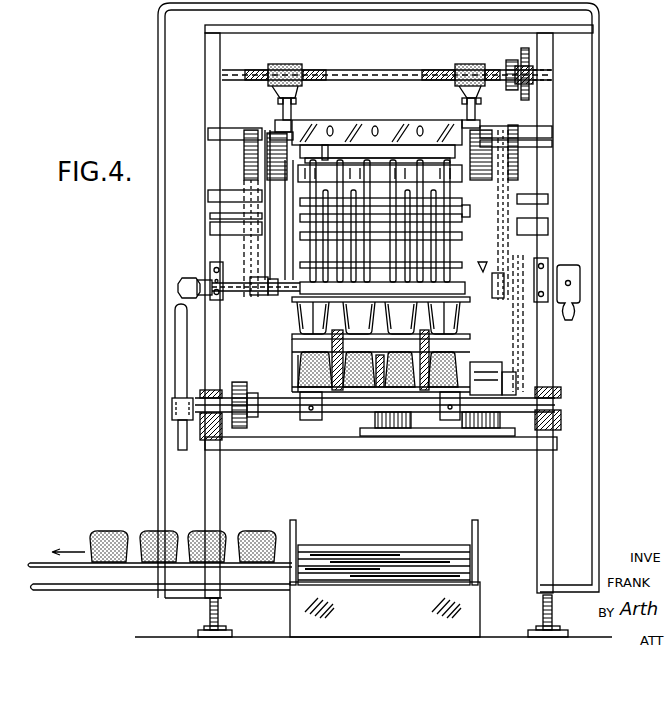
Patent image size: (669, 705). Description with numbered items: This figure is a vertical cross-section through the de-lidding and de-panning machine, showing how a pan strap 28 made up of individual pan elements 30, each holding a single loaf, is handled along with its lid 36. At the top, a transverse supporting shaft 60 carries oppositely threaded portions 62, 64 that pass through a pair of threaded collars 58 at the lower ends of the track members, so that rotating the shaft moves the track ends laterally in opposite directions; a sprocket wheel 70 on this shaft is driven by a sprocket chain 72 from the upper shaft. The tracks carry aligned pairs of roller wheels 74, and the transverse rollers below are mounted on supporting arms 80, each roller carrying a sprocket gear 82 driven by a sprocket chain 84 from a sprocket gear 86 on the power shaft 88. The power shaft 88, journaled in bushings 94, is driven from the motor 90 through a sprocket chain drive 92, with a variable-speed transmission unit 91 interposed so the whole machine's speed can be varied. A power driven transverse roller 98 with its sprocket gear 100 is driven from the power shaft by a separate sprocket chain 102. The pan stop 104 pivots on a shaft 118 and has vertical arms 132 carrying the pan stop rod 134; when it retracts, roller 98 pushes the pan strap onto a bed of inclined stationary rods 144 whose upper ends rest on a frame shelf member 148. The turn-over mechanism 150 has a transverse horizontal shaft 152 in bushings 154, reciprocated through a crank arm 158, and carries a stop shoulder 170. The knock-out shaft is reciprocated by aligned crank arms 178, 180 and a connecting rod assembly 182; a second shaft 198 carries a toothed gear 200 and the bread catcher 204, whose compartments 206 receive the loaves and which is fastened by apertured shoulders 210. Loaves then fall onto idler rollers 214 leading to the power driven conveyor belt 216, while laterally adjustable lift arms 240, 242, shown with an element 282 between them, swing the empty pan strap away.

The pan strap 28 is at (409, 107).
The pan element 30 is at (359, 334).
The lid 36 is at (373, 106).
The threaded collar 58 is at (290, 65).
The transverse supporting shaft 60 is at (364, 70).
The threaded portion 62 is at (260, 70).
The threaded portion 64 is at (441, 70).
The sprocket wheel 70 is at (520, 92).
The sprocket chain 72 is at (530, 56).
The roller wheels 74 is at (303, 150).
The supporting arm 80 is at (207, 182).
The sprocket gear 82 is at (240, 150).
The bracket 84 is at (262, 275).
The sprocket gear 86 is at (270, 291).
The power shaft 88 is at (258, 296).
The motor 90 is at (412, 430).
The variable-speed transmission unit 91 is at (486, 362).
The sprocket chain drive 92 is at (525, 348).
The bushing 94 is at (510, 250).
The power driven transverse roller 98 is at (530, 140).
The sprocket gear 100 is at (500, 145).
The sprocket chain 102 is at (540, 245).
The pan stop 104 is at (324, 158).
The shaft 118 is at (477, 214).
The vertical arm 132 is at (250, 217).
The pan stop rod 134 is at (408, 150).
The stationary rod 144 is at (357, 257).
The frame shelf member 148 is at (240, 192).
The turn-over mechanism 150 is at (484, 262).
The transverse horizontal shaft 152 is at (222, 268).
The bushing 154 is at (215, 268).
The crank arm 158 is at (582, 292).
The stop shoulder 170 is at (272, 296).
The crank arm 178 is at (172, 430).
The crank arm 180 is at (178, 291).
The connecting rod assembly 182 is at (175, 340).
The shaft 198 is at (520, 412).
The toothed gear 200 is at (248, 428).
The bread catcher 204 is at (350, 418).
The compartment 206 is at (298, 376).
The apertured shoulder 210 is at (306, 420).
The idler roller 214 is at (380, 556).
The power driven conveyor belt 216 is at (143, 568).
The lift arm 240 is at (316, 334).
The lift arm 242 is at (444, 334).
The pin 282 is at (405, 360).